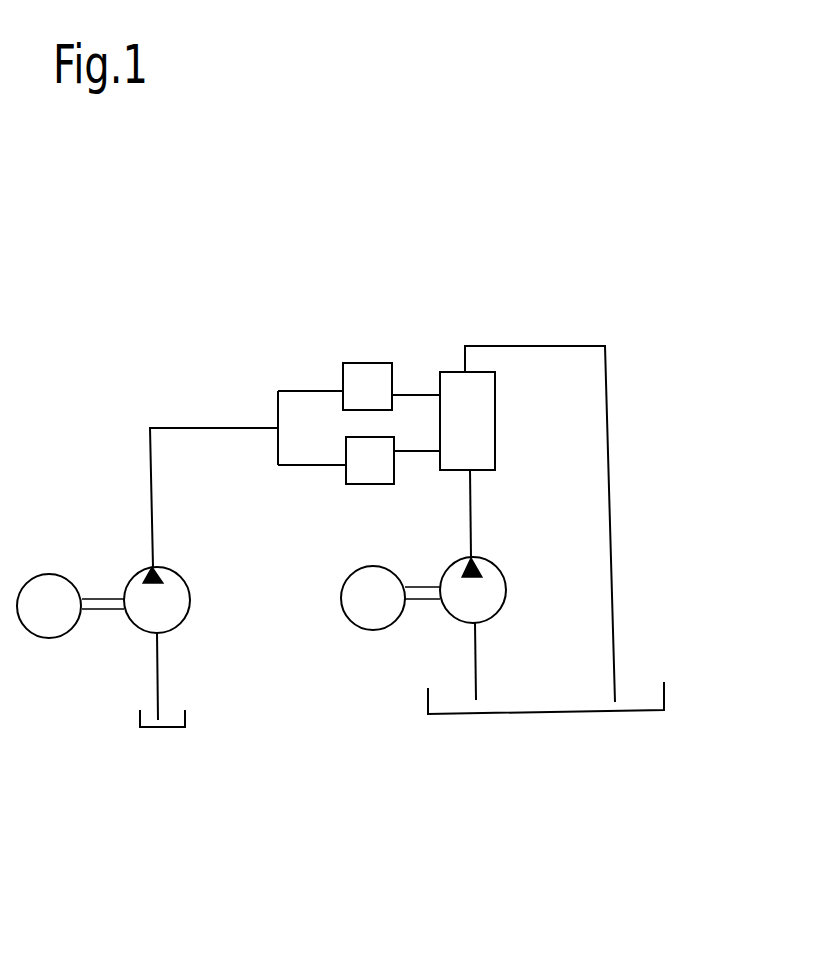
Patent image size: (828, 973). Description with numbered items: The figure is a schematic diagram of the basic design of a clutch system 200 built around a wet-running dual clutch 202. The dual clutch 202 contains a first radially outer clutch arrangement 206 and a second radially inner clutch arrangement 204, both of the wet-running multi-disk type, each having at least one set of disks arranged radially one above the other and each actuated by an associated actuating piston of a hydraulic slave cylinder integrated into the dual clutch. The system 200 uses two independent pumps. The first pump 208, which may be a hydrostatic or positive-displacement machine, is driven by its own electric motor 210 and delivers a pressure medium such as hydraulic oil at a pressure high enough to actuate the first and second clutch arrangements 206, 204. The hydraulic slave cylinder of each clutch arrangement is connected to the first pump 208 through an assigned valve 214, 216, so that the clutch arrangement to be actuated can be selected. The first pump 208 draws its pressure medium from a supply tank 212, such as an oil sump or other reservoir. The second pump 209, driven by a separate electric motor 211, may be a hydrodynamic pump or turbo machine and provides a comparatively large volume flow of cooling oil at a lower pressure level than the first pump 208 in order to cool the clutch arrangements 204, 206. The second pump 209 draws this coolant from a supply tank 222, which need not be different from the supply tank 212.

The clutch system 200 is at (258, 214).
The wet-running dual clutch 202 is at (571, 372).
The second radially inner clutch arrangement 204 is at (477, 444).
The first radially outer clutch arrangement 206 is at (473, 395).
The first pump 208 is at (186, 616).
The second pump 209 is at (497, 613).
The electric motor 210 is at (45, 575).
The electric motor 211 is at (353, 572).
The supply tank 212 is at (182, 722).
The valve 214 is at (373, 362).
The valve 216 is at (395, 433).
The supply tank 222 is at (455, 710).